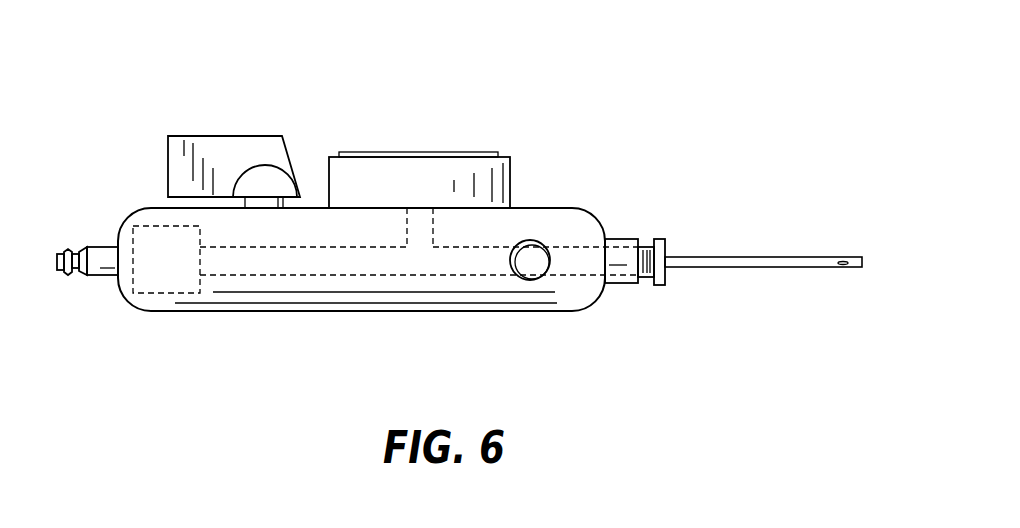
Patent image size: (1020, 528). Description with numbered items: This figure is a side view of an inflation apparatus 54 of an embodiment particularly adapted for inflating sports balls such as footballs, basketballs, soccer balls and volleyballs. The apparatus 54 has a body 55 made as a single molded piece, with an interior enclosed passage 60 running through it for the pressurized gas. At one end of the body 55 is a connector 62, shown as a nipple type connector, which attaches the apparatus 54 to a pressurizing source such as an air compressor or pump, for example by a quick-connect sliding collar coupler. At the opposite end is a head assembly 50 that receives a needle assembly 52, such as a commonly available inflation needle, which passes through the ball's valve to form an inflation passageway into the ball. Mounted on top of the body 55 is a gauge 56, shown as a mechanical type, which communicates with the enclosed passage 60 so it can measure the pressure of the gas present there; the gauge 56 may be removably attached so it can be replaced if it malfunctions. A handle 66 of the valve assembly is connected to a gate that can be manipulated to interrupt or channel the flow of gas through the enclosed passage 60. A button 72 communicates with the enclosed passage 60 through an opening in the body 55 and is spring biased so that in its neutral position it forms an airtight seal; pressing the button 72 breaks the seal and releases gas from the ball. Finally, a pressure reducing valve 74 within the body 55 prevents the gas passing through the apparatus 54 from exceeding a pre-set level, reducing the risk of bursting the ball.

The head assembly 50 is at (625, 239).
The needle assembly 52 is at (753, 257).
The apparatus 54 is at (309, 112).
The body 55 is at (545, 208).
The gauge 56 is at (422, 152).
The interior enclosed passage 60 is at (418, 262).
The connector 62 is at (100, 246).
The handle 66 is at (230, 135).
The button 72 is at (528, 263).
The pressure reducing valve 74 is at (168, 276).